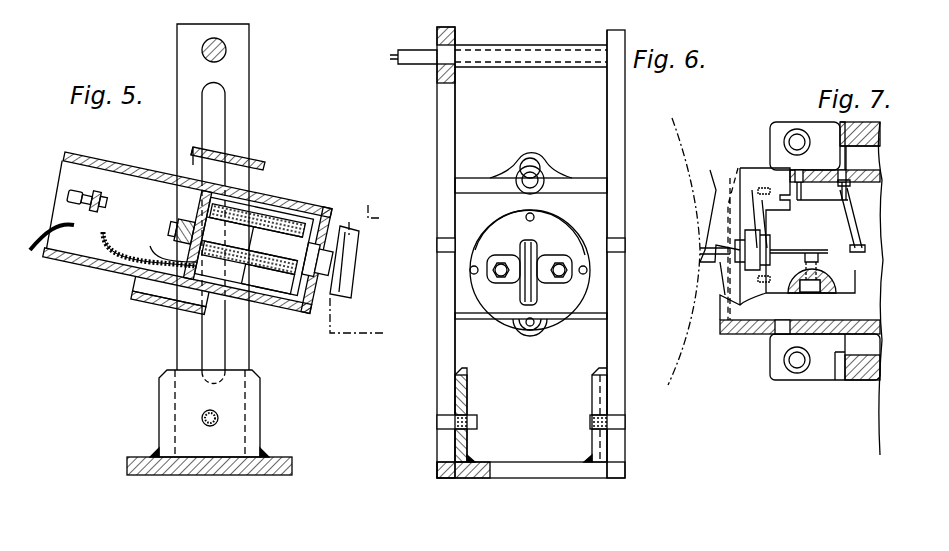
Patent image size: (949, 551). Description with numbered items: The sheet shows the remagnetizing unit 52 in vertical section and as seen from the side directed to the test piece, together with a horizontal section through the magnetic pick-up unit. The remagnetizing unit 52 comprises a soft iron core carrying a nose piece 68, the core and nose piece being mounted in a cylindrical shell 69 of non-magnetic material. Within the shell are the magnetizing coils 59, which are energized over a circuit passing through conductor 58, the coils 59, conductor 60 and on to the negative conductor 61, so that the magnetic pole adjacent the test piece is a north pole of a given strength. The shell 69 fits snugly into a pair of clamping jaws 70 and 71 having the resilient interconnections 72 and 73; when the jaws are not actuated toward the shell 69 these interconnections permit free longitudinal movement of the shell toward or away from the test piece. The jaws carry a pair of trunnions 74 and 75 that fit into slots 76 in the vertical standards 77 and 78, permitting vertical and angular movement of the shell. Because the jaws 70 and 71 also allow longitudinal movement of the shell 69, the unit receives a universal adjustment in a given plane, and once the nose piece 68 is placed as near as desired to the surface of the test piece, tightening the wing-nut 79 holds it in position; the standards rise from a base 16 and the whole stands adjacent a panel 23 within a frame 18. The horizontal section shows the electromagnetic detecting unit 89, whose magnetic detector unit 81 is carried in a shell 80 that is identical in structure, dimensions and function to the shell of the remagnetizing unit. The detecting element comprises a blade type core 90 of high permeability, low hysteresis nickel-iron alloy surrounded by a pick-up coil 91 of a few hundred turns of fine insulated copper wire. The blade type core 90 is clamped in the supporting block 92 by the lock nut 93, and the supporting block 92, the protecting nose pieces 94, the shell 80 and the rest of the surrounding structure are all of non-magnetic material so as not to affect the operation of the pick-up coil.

In FIG. 5, the remagnetizing unit 52 is at (150, 146).
In FIG. 5, the vertical standard 78 is at (250, 80).
In FIG. 5, the slots 76 is at (214, 122).
In FIG. 6, the slots 76 is at (440, 134).
In FIG. 5, the base column 16 is at (213, 340).
In FIG. 5, the resilient interconnection 72 is at (265, 160).
In FIG. 6, the resilient interconnection 72 is at (535, 155).
In FIG. 5, the trunnion 74 is at (265, 192).
In FIG. 6, the trunnion 74 is at (617, 250).
In FIG. 5, the cylindrical shell 69 is at (118, 284).
In FIG. 6, the cylindrical shell 69 is at (566, 228).
In FIG. 5, the negative conductor 61 is at (240, 222).
In FIG. 5, the magnetizing coils 59 is at (278, 280).
In FIG. 5, the resilient interconnection 73 is at (163, 325).
In FIG. 6, the resilient interconnection 73 is at (524, 340).
In FIG. 5, the conductor 58 is at (153, 258).
In FIG. 5, the conductor 60 is at (162, 244).
In FIG. 5, the nose piece 68 is at (344, 280).
In FIG. 6, the nose piece 68 is at (520, 292).
In FIG. 5, the panel 23 is at (359, 266).
In FIG. 6, the frame 18 is at (620, 84).
In FIG. 6, the wing-nut 79 is at (407, 62).
In FIG. 6, the vertical standard 77 is at (437, 84).
In FIG. 6, the clamping jaw 70 is at (531, 248).
In FIG. 6, the trunnion 75 is at (440, 250).
In FIG. 6, the clamping jaw 71 is at (598, 312).
In FIG. 7, the shell 80 is at (884, 330).
In FIG. 7, the magnetic detector unit 81 is at (772, 325).
In FIG. 7, the protecting nose pieces 94 is at (704, 251).
In FIG. 7, the pick-up coil 91 is at (770, 245).
In FIG. 7, the blade type core 90 is at (806, 252).
In FIG. 7, the lock nut 93 is at (812, 293).
In FIG. 7, the supporting block 92 is at (828, 294).
In FIG. 7, the electromagnetic detecting unit 89 is at (818, 380).